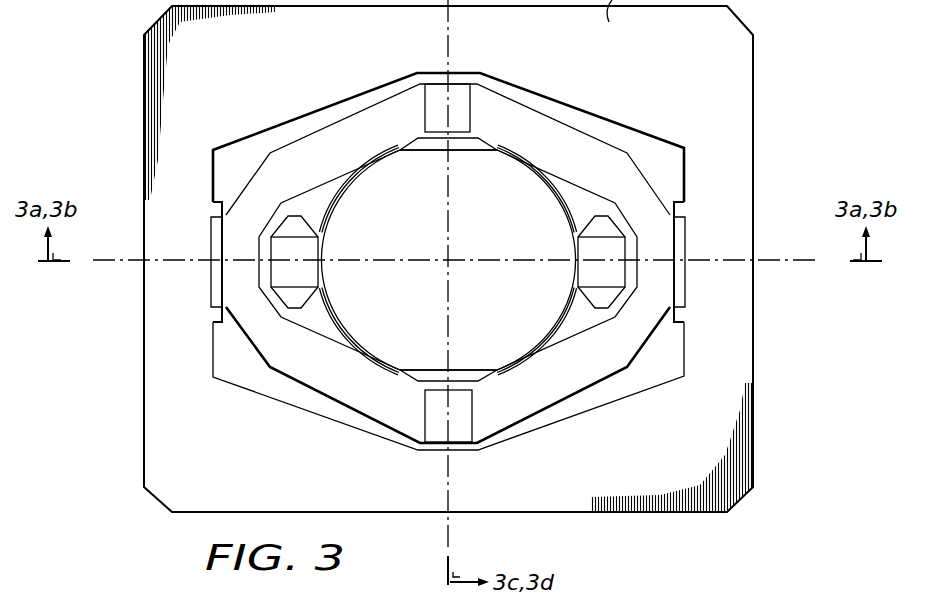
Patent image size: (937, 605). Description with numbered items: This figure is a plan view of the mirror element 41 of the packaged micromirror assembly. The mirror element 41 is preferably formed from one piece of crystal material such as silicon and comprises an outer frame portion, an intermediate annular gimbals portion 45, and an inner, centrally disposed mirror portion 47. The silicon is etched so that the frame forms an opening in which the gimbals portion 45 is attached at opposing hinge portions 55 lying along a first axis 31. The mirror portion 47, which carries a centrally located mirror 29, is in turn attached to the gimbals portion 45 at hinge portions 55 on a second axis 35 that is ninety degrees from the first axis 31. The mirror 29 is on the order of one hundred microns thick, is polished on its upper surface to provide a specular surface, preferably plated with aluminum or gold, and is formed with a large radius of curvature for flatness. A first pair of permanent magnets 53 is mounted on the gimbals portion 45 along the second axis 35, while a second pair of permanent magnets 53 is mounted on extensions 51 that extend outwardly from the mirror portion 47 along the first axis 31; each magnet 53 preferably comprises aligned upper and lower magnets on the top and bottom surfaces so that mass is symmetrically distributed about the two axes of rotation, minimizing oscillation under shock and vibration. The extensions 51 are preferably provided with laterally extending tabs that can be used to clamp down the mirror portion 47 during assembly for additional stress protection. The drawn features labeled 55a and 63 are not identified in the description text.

The mirror 29 is at (514, 226).
The first axis 31 is at (797, 258).
The second axis 35 is at (447, 528).
The mirror element 41 is at (754, 341).
The intermediate annular gimbals portion 45 is at (250, 197).
The mirror portion 47 is at (350, 184).
The extensions 51 is at (275, 297).
The permanent magnets 53 is at (462, 90).
The hinge portions 55 is at (428, 152).
The pole shoe wedges 55a is at (294, 212).
The spacer bars 63 is at (497, 148).